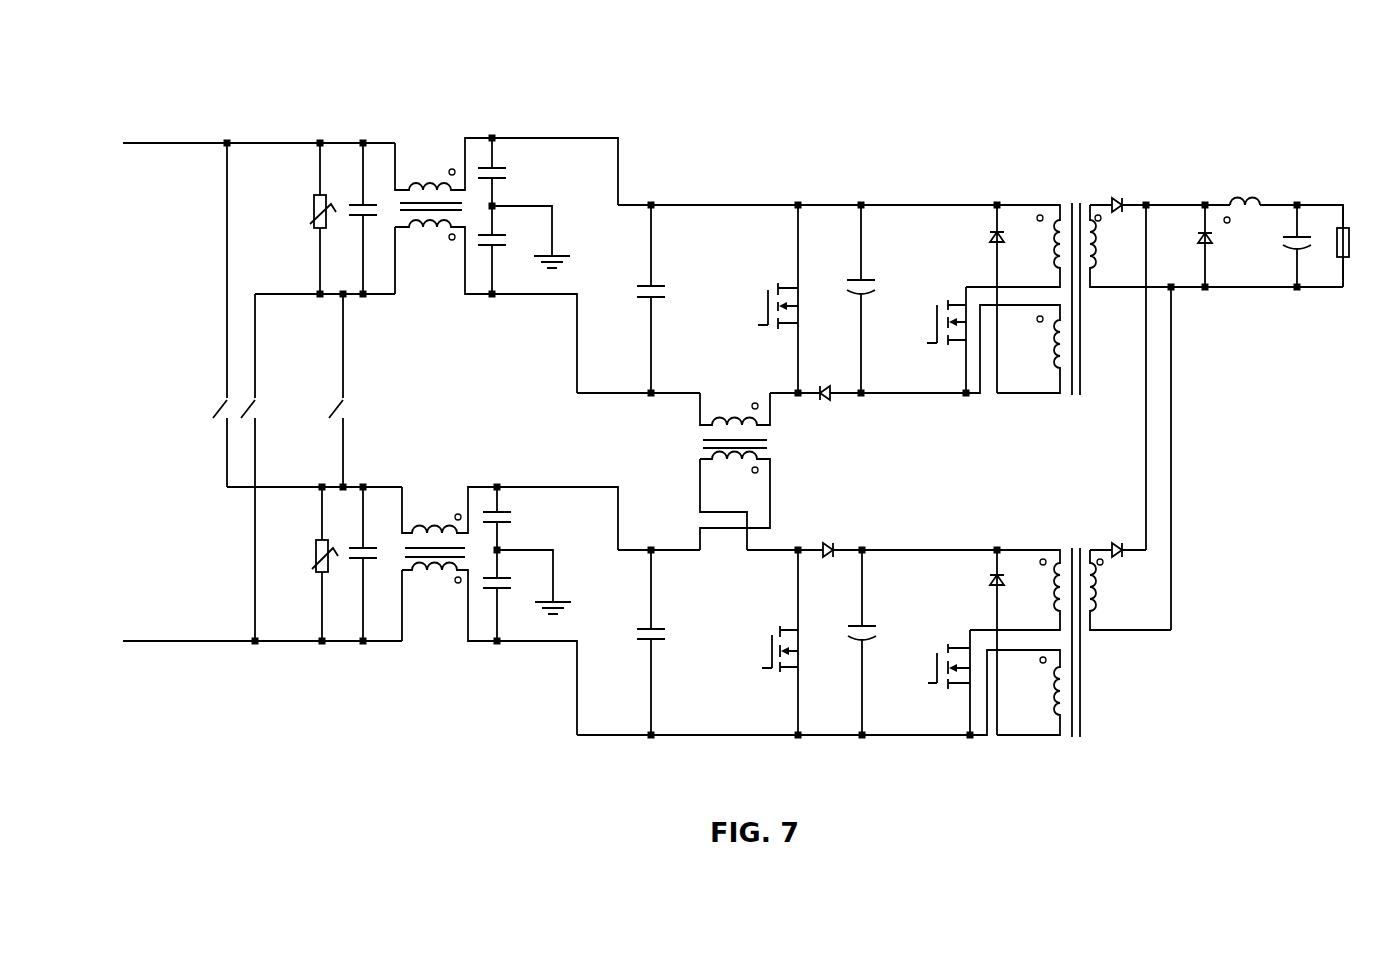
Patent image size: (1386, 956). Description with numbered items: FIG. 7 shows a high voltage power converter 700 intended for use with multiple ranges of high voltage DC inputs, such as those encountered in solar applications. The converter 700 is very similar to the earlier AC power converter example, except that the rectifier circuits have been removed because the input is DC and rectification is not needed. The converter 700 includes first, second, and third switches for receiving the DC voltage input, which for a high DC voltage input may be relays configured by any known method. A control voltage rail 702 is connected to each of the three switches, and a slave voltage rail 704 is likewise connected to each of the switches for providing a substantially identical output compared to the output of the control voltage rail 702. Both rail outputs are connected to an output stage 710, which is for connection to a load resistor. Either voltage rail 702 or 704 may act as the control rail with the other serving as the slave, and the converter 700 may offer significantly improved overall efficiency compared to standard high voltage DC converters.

The high voltage power converter 700 is at (250, 76).
The control voltage rail 702 is at (760, 753).
The slave voltage rail 704 is at (716, 132).
The output stage 710 is at (1218, 193).